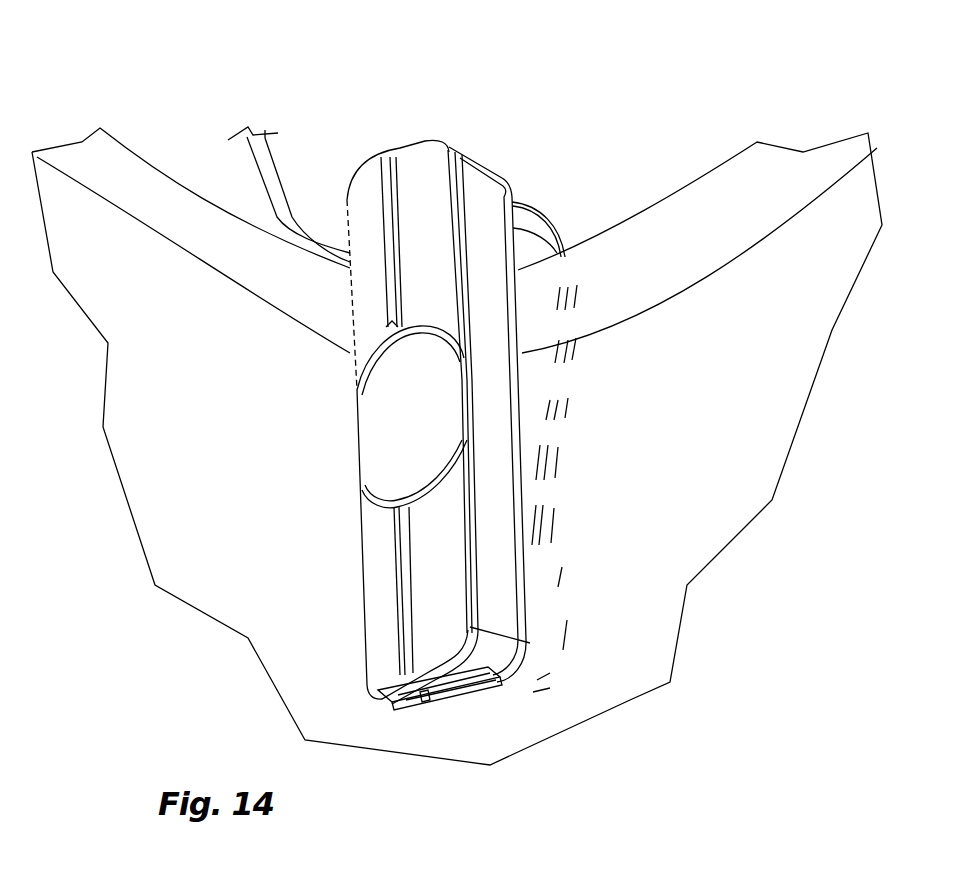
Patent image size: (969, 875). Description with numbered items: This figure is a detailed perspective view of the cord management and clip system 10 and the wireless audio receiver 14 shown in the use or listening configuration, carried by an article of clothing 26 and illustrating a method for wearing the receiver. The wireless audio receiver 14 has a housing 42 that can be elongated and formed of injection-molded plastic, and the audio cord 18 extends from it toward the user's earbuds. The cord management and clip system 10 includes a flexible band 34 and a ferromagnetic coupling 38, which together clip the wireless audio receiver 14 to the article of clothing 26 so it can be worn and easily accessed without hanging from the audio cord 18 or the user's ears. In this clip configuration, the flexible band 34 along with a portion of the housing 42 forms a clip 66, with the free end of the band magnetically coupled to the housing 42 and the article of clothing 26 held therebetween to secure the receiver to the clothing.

The cord management and clip system 10 is at (523, 160).
The wireless audio receiver 14 is at (434, 125).
The audio cord 18 is at (260, 178).
The article of clothing 26 is at (737, 363).
The flexible band 34 is at (570, 385).
The ferromagnetic coupling 38 is at (528, 672).
The housing 42 is at (377, 404).
The clip 66 is at (540, 433).